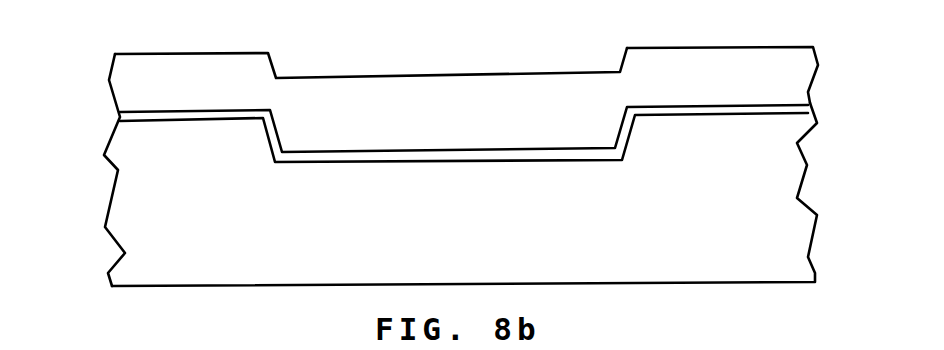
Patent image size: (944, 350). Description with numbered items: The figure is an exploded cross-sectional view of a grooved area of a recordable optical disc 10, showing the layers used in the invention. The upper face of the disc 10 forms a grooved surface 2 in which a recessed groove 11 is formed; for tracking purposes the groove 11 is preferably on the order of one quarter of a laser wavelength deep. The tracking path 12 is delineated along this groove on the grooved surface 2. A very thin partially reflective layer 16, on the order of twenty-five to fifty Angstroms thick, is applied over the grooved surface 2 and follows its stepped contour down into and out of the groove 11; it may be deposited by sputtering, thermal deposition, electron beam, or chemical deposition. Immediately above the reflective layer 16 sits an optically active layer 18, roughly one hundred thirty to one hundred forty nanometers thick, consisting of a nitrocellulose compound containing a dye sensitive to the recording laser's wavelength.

The grooved surface 2 is at (96, 170).
The disc 10 is at (489, 194).
The groove 11 is at (371, 47).
The tracking path 12 is at (464, 128).
The partially reflective layer 16 is at (505, 110).
The optically active layer 18 is at (722, 59).